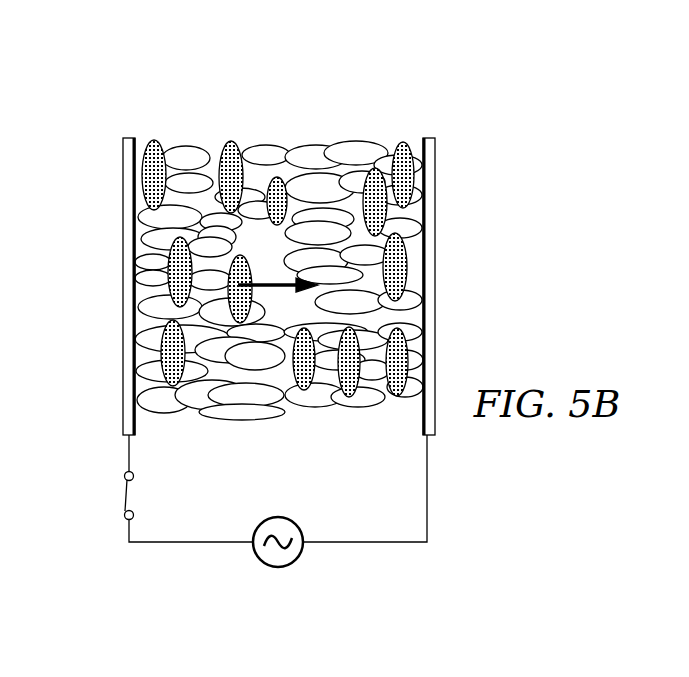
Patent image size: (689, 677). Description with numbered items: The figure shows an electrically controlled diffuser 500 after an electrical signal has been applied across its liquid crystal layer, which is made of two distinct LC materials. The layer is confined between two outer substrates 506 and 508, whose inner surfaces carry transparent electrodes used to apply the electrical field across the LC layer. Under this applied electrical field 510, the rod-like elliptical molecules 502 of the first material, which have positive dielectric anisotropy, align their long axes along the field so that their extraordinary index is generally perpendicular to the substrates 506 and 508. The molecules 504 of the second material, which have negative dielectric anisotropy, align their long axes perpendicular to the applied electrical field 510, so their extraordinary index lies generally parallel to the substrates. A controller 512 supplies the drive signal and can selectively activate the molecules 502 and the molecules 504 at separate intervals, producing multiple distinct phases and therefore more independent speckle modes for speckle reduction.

The electrically controlled diffuser 500 is at (150, 70).
The molecules of the first LC material 502 is at (228, 142).
The molecules of the second LC material 504 is at (207, 408).
The outer substrate 506 is at (122, 204).
The outer substrate 508 is at (436, 204).
The applied electrical field 510 is at (262, 282).
The controller 512 is at (275, 568).